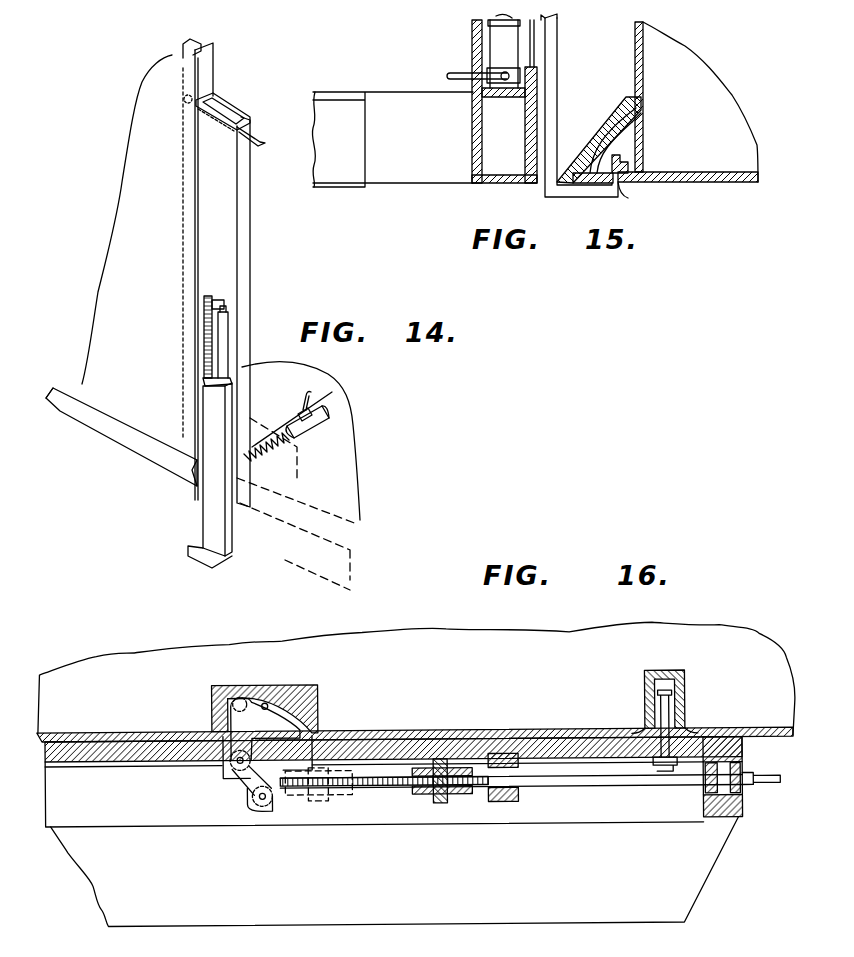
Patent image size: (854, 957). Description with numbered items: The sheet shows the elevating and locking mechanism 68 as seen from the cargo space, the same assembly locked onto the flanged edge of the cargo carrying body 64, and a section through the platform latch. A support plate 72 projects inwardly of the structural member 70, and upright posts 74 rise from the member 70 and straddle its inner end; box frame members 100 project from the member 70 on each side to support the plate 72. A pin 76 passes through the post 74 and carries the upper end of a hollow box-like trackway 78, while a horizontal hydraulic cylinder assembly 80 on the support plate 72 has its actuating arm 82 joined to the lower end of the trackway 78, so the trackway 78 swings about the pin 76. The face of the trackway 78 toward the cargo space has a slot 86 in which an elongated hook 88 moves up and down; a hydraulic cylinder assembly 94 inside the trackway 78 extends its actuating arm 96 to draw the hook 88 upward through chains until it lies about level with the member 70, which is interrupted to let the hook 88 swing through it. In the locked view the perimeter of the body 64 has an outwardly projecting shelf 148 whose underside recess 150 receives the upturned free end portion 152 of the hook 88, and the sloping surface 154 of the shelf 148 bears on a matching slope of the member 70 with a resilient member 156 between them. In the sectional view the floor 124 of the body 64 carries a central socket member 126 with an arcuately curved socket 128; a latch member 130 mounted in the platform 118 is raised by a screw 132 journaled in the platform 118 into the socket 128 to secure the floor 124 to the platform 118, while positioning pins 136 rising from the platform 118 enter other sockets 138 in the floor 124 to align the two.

In FIG. 15, the cargo carrying body 64 is at (688, 119).
In FIG. 14, the mechanism 68 is at (227, 306).
In FIG. 14, the structural member 70 is at (138, 452).
In FIG. 15, the structural member 70 is at (635, 124).
In FIG. 15, the support plate 72 is at (360, 93).
In FIG. 14, the upright post 74 is at (213, 80).
In FIG. 14, the pin 76 is at (250, 129).
In FIG. 14, the trackway 78 is at (250, 215).
In FIG. 15, the trackway 78 is at (472, 146).
In FIG. 14, the hydraulic cylinder assembly 80 is at (330, 430).
In FIG. 14, the actuating arm 82 is at (270, 438).
In FIG. 14, the slot 86 is at (213, 298).
In FIG. 14, the hook 88 is at (220, 530).
In FIG. 15, the hook 88 is at (565, 198).
In FIG. 14, the hydraulic cylinder assembly 94 is at (203, 352).
In FIG. 15, the hydraulic cylinder assembly 94 is at (490, 35).
In FIG. 14, the actuating arm 96 is at (228, 330).
In FIG. 15, the box frame member 100 is at (392, 144).
In FIG. 16, the platform 118 is at (745, 752).
In FIG. 16, the floor 124 is at (500, 733).
In FIG. 16, the socket member 126 is at (270, 725).
In FIG. 16, the socket 128 is at (272, 706).
In FIG. 16, the latch member 130 is at (215, 700).
In FIG. 16, the screw 132 is at (583, 790).
In FIG. 16, the positioning pin 136 is at (686, 706).
In FIG. 16, the socket 138 is at (692, 700).
In FIG. 15, the shelf 148 is at (600, 160).
In FIG. 15, the recess 150 is at (630, 167).
In FIG. 15, the upturned free end portion 152 is at (618, 184).
In FIG. 15, the sloping surface 154 is at (603, 135).
In FIG. 15, the resilient member 156 is at (602, 113).